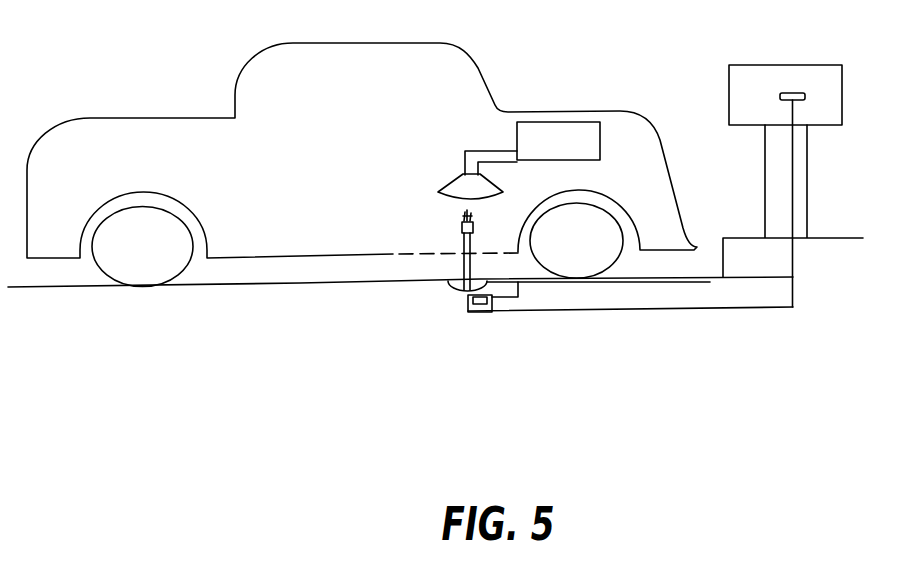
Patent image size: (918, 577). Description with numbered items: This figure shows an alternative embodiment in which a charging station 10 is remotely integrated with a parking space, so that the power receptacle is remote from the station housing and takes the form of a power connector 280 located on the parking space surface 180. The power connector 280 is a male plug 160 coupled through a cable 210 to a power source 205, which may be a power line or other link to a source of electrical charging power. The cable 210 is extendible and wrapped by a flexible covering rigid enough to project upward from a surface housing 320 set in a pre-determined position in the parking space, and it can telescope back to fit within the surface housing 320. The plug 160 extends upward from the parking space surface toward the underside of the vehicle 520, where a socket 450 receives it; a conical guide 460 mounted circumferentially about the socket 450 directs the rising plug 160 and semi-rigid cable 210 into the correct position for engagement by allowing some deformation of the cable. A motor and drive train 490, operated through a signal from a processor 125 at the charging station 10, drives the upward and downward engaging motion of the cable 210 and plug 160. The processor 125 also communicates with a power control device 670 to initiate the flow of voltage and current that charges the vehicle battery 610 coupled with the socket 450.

The charging station 10 is at (782, 75).
The processor 125 is at (805, 97).
The male plug 160 is at (475, 228).
The parking space surface 180 is at (710, 282).
The power source 205 is at (580, 313).
The cable 210 is at (473, 259).
The power connector 280 is at (457, 226).
The surface housing 320 is at (459, 290).
The socket 450 is at (498, 176).
The guide 460 is at (450, 192).
The motor and drive train 490 is at (518, 289).
The vehicle 520 is at (477, 115).
The vehicle battery 610 is at (554, 129).
The power control device 670 is at (490, 300).